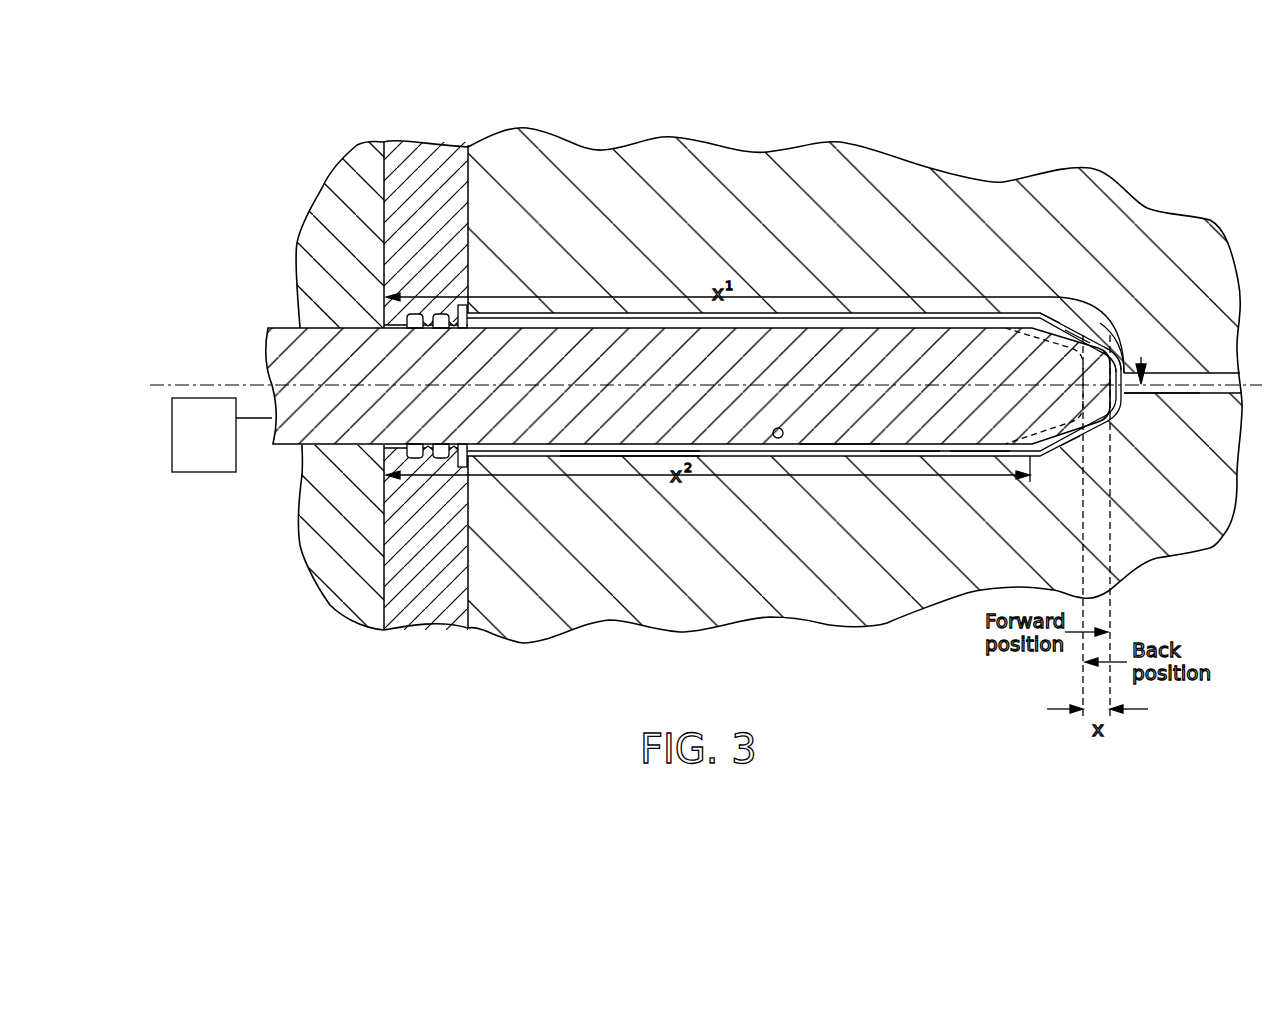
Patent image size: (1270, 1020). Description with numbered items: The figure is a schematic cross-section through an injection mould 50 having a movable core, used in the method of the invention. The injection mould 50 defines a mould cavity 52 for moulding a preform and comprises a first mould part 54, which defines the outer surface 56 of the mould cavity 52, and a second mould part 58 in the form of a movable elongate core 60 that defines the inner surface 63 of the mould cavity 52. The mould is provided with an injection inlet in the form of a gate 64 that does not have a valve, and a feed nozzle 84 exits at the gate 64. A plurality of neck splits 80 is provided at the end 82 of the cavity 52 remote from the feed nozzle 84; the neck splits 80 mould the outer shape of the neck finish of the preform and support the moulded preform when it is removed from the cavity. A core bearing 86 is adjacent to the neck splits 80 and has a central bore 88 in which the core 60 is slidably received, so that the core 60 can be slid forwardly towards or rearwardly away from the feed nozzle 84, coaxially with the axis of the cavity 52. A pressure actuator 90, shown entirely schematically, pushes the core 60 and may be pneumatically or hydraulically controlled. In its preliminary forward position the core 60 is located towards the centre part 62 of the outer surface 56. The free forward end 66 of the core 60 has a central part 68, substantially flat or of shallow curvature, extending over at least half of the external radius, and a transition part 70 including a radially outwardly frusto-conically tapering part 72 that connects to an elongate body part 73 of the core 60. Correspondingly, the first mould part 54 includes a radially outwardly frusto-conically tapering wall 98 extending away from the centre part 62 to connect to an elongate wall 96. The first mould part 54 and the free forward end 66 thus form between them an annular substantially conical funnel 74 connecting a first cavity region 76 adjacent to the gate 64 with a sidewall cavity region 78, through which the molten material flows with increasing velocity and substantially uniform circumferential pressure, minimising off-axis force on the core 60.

The injection mould 50 is at (972, 185).
The mould cavity 52 is at (930, 313).
The first mould part 54 is at (805, 152).
The outer surface 56 is at (780, 313).
The second mould part 58 is at (613, 456).
The movable elongate core 60 is at (628, 330).
The centre part 62 is at (1135, 366).
The inner surface 63 is at (777, 438).
The gate 64 is at (1138, 395).
The free forward end 66 is at (1122, 352).
The central part 68 is at (1141, 358).
The transition part 70 is at (1073, 333).
The tapering part 72 is at (1046, 455).
The elongate body part 73 is at (838, 445).
The annular substantially conical funnel 74 is at (1042, 318).
The first cavity region 76 is at (1112, 342).
The sidewall cavity region 78 is at (902, 457).
The neck splits 80 is at (441, 152).
The end 82 is at (437, 457).
The feed nozzle 84 is at (1212, 373).
The core bearing 86 is at (297, 538).
The central bore 88 is at (300, 327).
The pressure actuator 90 is at (172, 432).
The elongate wall 96 is at (977, 457).
The tapering wall 98 is at (1075, 443).